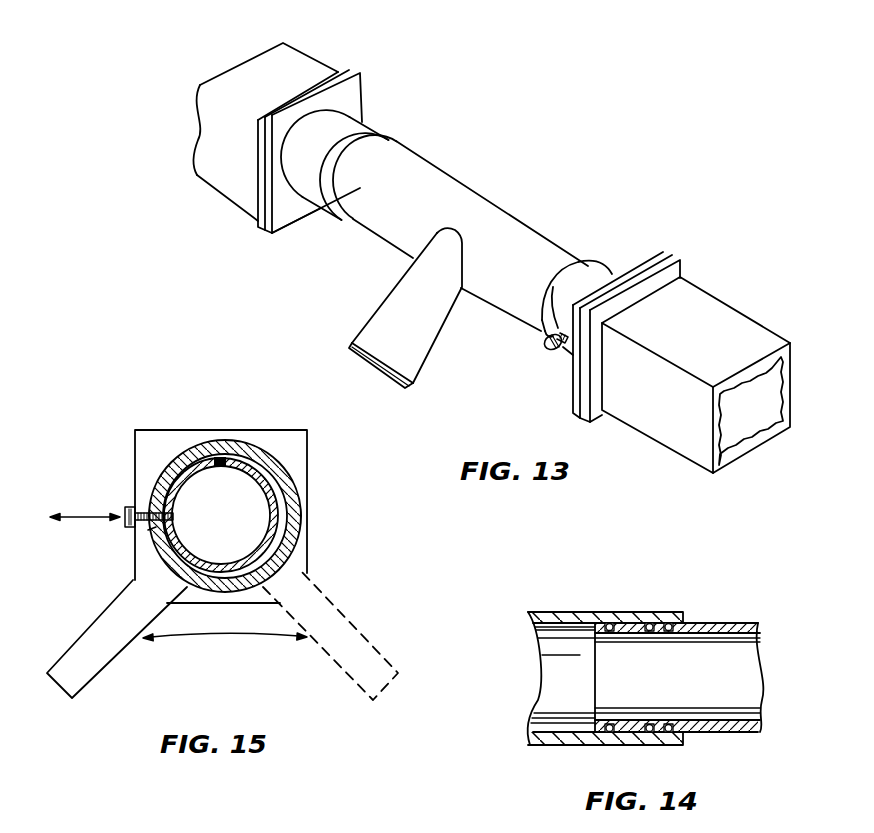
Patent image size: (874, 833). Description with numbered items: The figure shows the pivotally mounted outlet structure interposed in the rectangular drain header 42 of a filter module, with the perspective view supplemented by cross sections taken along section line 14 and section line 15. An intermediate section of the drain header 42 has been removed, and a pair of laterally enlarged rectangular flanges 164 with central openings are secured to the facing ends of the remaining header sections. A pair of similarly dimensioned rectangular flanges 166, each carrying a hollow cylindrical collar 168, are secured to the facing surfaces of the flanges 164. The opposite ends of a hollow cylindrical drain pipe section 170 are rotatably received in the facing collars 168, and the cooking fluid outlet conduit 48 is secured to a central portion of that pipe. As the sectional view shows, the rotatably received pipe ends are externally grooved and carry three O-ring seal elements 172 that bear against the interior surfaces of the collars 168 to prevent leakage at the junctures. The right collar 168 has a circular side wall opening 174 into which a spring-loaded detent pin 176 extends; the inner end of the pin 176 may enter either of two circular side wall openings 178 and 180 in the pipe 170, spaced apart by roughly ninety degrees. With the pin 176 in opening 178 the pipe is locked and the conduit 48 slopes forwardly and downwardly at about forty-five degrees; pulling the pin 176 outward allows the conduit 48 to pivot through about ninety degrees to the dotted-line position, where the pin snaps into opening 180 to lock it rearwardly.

In FIG. 13, the drain header 42 is at (243, 77).
In FIG. 13, the outlet conduit 48 is at (372, 312).
In FIG. 15, the outlet conduit 48 is at (90, 619).
In FIG. 13, the rectangular flanges 164 is at (347, 60).
In FIG. 13, the rectangular flanges 166 is at (357, 92).
In FIG. 15, the rectangular flanges 166 is at (298, 470).
In FIG. 13, the collars 168 is at (373, 120).
In FIG. 15, the collars 168 is at (243, 442).
In FIG. 14, the collars 168 is at (560, 610).
In FIG. 13, the drain pipe section 170 is at (457, 183).
In FIG. 15, the drain pipe section 170 is at (278, 500).
In FIG. 14, the drain pipe section 170 is at (748, 623).
In FIG. 14, the O-ring seal elements 172 is at (608, 613).
In FIG. 13, the side wall opening 174 is at (550, 300).
In FIG. 15, the side wall opening 174 is at (148, 530).
In FIG. 13, the detent pin 176 is at (547, 342).
In FIG. 15, the detent pin 176 is at (140, 490).
In FIG. 15, the side wall opening 178 is at (173, 498).
In FIG. 15, the side wall opening 180 is at (222, 458).
In FIG. 13, the section line 14 is at (391, 187).
In FIG. 13, the section line 15 is at (733, 243).